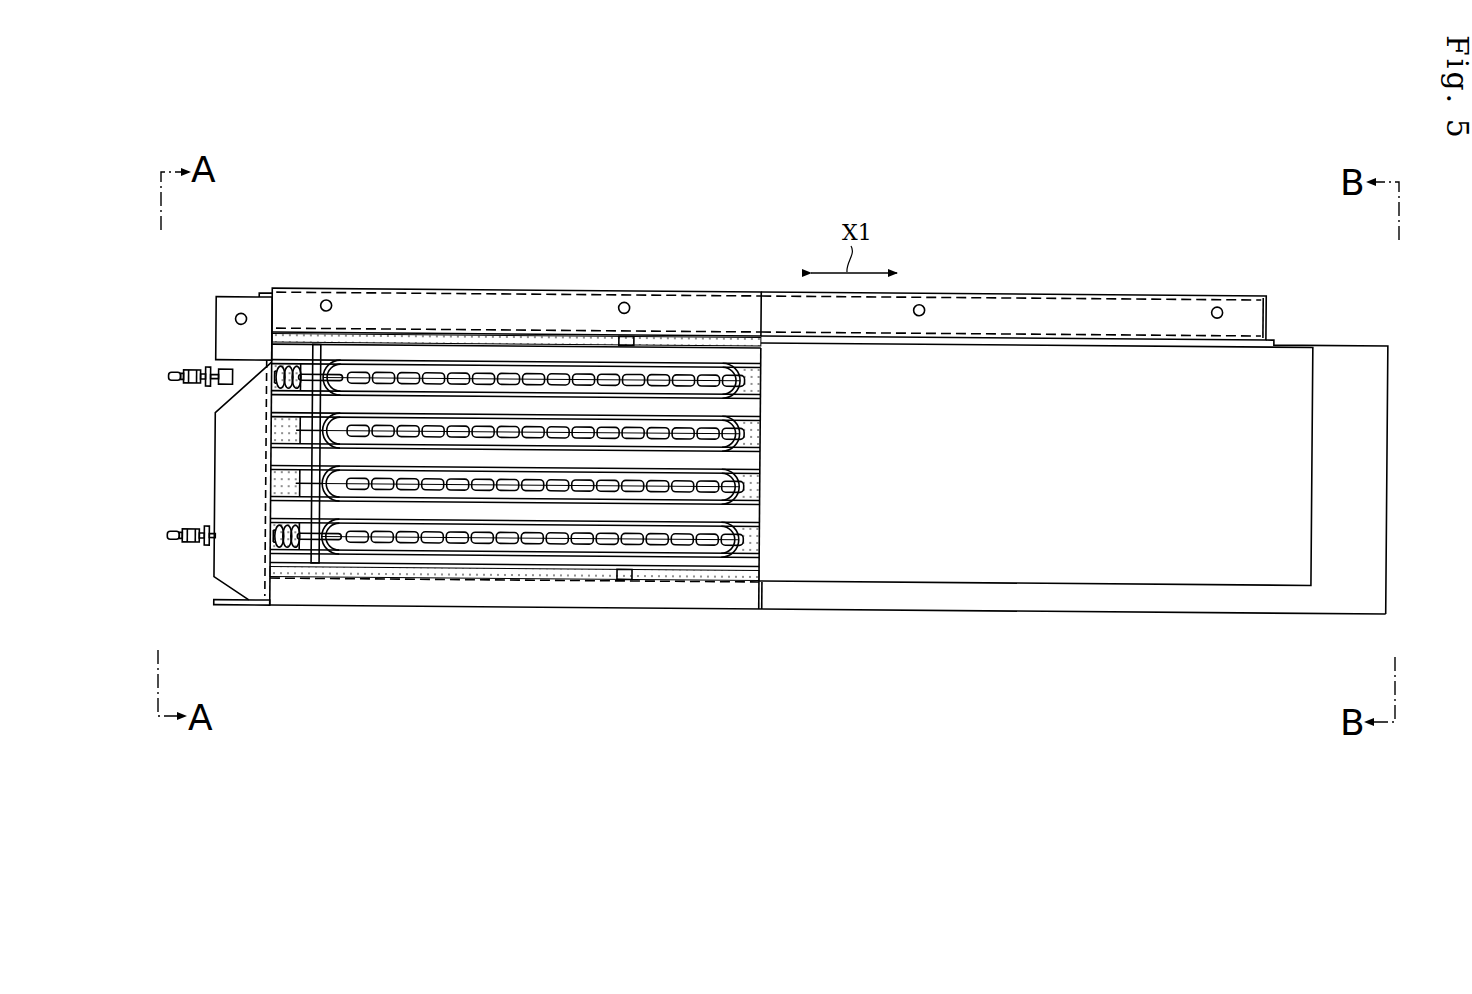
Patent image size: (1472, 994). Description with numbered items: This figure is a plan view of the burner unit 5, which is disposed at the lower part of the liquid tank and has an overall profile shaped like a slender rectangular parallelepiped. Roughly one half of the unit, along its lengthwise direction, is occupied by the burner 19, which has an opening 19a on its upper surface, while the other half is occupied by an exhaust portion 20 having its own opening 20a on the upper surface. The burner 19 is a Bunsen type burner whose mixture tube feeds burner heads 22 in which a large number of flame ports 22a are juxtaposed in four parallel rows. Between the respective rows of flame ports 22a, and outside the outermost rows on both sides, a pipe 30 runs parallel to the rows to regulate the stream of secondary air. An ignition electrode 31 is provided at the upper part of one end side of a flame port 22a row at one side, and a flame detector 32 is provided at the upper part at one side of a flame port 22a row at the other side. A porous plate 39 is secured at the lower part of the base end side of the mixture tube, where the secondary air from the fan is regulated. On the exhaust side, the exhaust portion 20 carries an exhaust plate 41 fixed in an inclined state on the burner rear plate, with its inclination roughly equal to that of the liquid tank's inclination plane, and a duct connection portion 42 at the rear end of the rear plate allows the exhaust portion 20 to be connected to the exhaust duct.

The burner unit 5 is at (1014, 240).
The burner 19 is at (525, 614).
The opening 19a is at (595, 345).
The exhaust portion 20 is at (1048, 614).
The opening 20a is at (963, 349).
The burner heads 22 is at (464, 553).
The flame ports 22a is at (506, 375).
The pipe 30 is at (720, 404).
The ignition electrode 31 is at (324, 549).
The flame detector 32 is at (318, 372).
The porous plate 39 is at (386, 578).
The exhaust plate 41 is at (1128, 356).
The duct connection portion 42 is at (1343, 356).